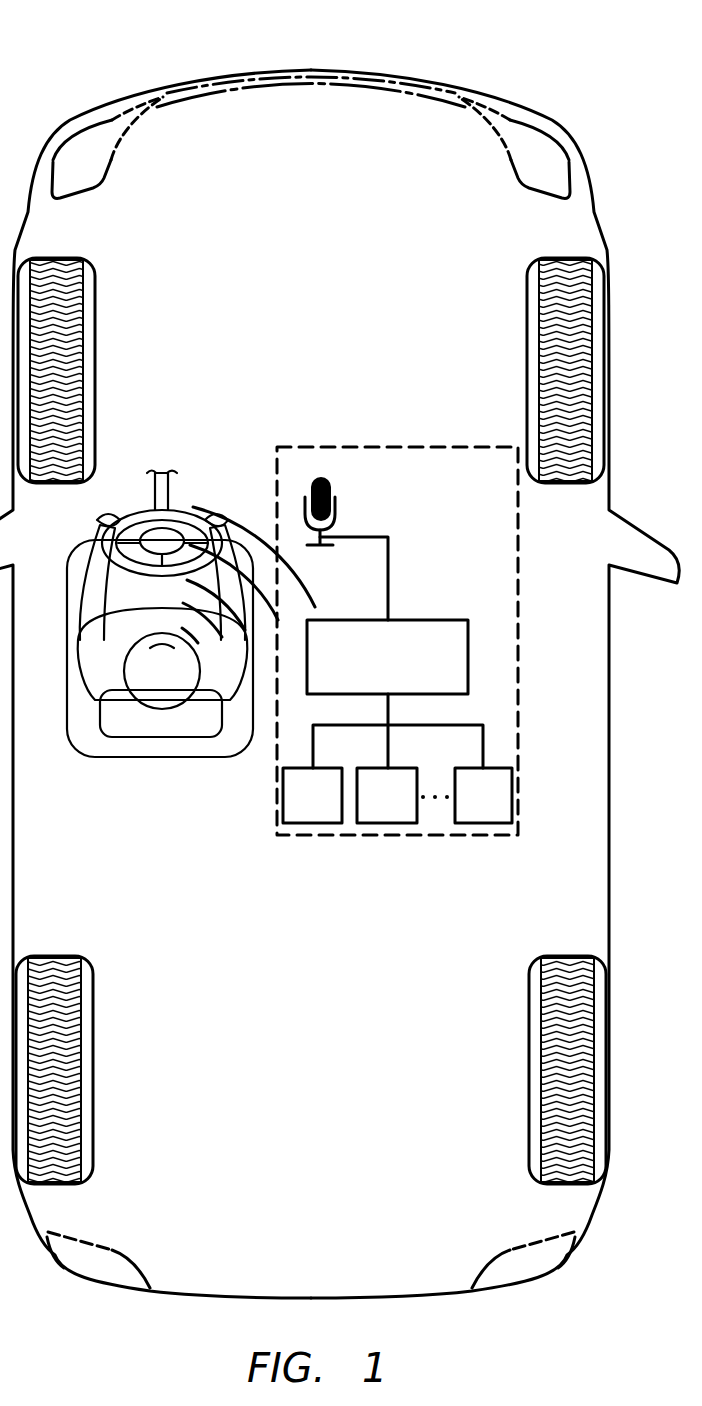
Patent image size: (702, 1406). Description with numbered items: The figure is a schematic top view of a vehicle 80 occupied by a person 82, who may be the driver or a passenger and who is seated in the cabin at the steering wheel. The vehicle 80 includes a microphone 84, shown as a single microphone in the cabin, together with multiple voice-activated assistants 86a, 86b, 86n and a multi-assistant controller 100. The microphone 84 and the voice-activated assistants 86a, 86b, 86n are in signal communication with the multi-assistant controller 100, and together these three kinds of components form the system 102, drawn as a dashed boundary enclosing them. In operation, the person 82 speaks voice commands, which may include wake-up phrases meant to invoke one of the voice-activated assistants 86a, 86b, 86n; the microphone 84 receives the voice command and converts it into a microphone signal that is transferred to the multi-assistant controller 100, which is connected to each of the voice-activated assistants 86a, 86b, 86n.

The vehicle 80 is at (118, 98).
The person 82 is at (107, 670).
The microphone 84 is at (338, 502).
The voice-activated assistant 86a is at (312, 795).
The voice-activated assistant 86b is at (387, 795).
The voice-activated assistant 86n is at (483, 795).
The multi-assistant controller 100 is at (387, 657).
The system 102 is at (345, 447).